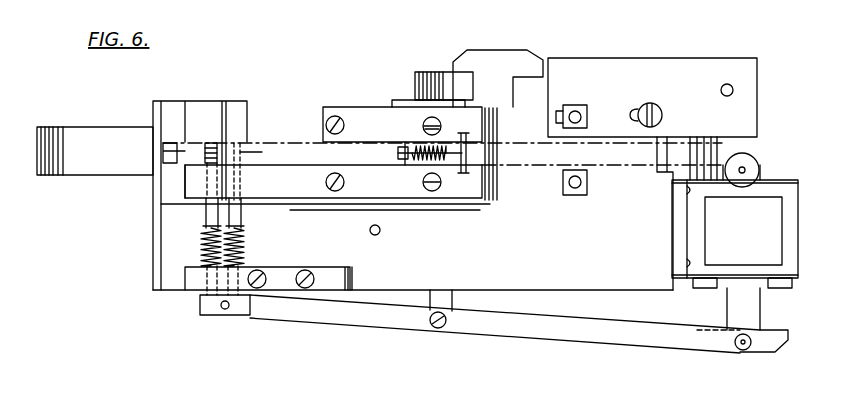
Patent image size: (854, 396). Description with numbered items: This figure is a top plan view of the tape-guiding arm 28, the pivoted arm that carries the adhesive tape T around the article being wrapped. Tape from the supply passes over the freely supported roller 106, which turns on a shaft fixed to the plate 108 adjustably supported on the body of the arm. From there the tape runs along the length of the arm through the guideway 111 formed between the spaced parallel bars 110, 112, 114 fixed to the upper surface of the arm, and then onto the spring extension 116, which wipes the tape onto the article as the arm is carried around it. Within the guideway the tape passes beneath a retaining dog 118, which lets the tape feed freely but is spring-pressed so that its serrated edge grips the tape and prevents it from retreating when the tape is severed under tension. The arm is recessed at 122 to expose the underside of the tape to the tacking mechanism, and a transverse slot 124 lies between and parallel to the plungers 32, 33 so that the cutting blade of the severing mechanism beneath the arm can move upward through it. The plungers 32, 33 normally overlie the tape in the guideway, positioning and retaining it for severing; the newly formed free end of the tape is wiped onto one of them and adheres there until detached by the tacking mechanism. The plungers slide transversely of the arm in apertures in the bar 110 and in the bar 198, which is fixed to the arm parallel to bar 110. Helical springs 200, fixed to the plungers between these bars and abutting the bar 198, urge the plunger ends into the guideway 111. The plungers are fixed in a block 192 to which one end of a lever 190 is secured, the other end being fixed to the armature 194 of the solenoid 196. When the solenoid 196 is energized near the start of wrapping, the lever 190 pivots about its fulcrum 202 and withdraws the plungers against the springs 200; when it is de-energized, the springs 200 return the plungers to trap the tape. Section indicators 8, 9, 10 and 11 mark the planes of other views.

The tape-guiding arm 28 is at (711, 45).
The roller 106 is at (672, 115).
The plate 108 is at (750, 102).
The bar 110 is at (398, 190).
The guideway 111 is at (359, 163).
The bar 112 is at (367, 118).
The bar 114 is at (197, 107).
The spring extension 116 is at (117, 137).
The retaining dog 118 is at (500, 128).
The recess 122 is at (310, 115).
The transverse slot 124 is at (252, 168).
The plunger 32 is at (143, 223).
The plunger 33 is at (274, 218).
The lever 190 is at (507, 332).
The block 192 is at (200, 303).
The armature 194 is at (737, 313).
The solenoid 196 is at (717, 225).
The bar 198 is at (193, 272).
The helical springs 200 is at (222, 256).
The fulcrum 202 is at (430, 330).
The section line 8- 8 is at (222, 100).
The section line 9- 9 is at (176, 157).
The section line 10- 10 is at (447, 118).
The section line 11- 11 is at (625, 93).
The tape T is at (523, 167).